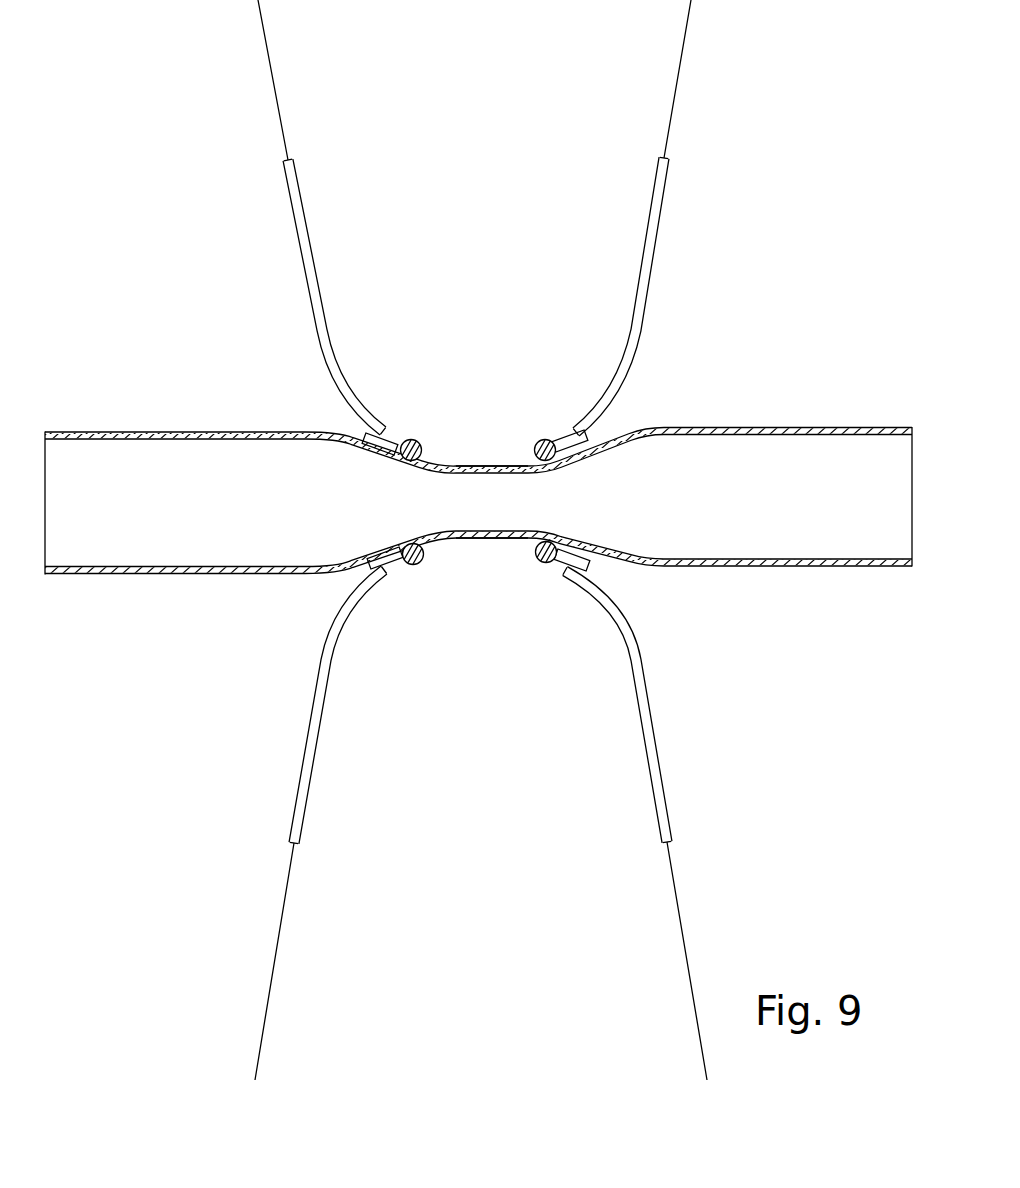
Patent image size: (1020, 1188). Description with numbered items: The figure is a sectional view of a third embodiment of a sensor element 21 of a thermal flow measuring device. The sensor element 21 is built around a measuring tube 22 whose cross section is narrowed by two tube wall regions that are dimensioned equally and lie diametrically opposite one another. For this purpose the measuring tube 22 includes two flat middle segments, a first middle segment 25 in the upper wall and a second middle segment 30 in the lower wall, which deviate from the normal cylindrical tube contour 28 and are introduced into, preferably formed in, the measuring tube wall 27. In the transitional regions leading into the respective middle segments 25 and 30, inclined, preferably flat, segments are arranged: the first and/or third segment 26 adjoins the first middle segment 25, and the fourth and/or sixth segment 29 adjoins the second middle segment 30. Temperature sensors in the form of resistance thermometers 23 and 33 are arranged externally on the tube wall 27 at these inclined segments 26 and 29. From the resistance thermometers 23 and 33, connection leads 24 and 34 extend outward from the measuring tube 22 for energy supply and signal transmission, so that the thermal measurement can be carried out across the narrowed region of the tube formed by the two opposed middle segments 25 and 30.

The sensor element 21 is at (478, 540).
The measuring tube 22 is at (478, 505).
The resistance thermometer 23 is at (542, 440).
The lead for signal transmission and/or energy supply 24 is at (643, 276).
The first middle segment 25 is at (468, 463).
The first and/or third segment 26 is at (568, 458).
The tube wall 27 is at (181, 432).
The tube contour 28 is at (106, 573).
The fourth and/or sixth segment 29 is at (376, 549).
The second middle segment 30 is at (470, 540).
The resistance thermometer 33 is at (546, 563).
The lead for signal transmission and/or energy supply 34 is at (305, 763).